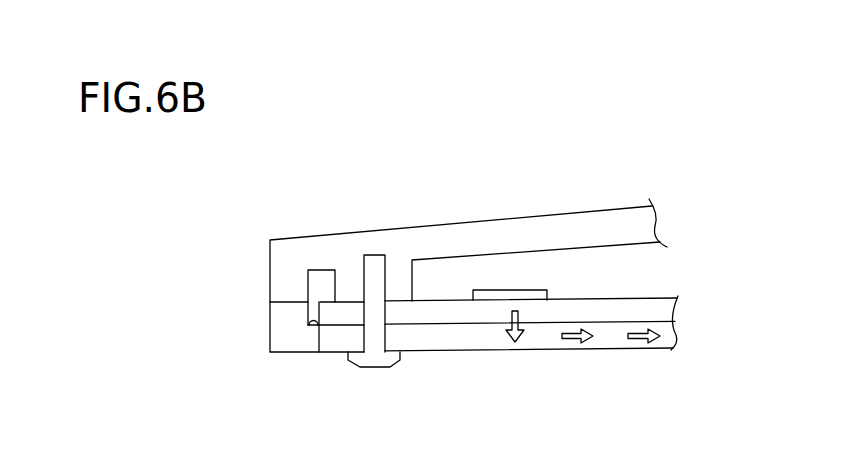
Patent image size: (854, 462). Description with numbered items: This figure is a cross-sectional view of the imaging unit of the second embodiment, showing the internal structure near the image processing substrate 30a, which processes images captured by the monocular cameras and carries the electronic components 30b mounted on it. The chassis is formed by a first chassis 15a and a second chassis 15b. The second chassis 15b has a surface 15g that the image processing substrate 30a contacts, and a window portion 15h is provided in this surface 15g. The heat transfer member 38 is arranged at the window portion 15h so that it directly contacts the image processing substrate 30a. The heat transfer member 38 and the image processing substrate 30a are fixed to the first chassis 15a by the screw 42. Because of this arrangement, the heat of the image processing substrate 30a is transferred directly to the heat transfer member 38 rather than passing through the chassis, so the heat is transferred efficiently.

The first chassis 15a is at (467, 230).
The second chassis 15b is at (281, 333).
The surface 15g is at (310, 319).
The window portion 15h is at (320, 337).
The heat transfer member 38 is at (336, 343).
The screw 42 is at (380, 364).
The image processing substrate 30a is at (676, 305).
The electronic components 30b is at (542, 290).